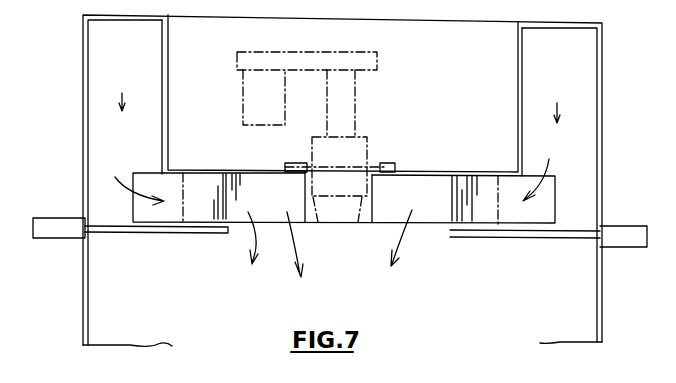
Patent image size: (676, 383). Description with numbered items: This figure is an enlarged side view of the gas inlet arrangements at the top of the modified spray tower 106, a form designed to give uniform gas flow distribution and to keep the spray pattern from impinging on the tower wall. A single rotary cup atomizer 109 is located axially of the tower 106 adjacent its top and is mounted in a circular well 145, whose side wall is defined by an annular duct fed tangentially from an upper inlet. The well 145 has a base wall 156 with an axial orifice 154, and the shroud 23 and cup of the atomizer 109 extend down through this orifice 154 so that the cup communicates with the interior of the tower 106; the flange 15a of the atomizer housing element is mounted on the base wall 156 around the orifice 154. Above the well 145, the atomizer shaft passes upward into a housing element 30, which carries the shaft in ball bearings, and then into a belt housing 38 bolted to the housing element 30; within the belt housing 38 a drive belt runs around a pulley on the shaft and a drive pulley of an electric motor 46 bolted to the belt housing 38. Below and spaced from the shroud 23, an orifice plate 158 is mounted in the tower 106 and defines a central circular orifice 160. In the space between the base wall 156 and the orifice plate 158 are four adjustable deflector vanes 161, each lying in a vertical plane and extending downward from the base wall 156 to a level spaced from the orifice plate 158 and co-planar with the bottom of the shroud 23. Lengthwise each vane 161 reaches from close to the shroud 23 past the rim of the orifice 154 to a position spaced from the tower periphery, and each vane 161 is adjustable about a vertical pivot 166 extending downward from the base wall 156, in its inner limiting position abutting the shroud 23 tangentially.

The tower 106 is at (83, 332).
The circular well 145 is at (509, 84).
The rotary cup atomizer 109 is at (484, 146).
The base wall 156 is at (175, 166).
The flange 15a is at (292, 159).
The axial orifice 154 is at (380, 164).
The shroud 23 is at (382, 192).
The adjustable deflector vane 161 is at (157, 216).
The vertical pivot 166 is at (183, 222).
The central circular orifice 160 is at (448, 212).
The orifice plate 158 is at (522, 224).
The electric motor 46 is at (286, 73).
The belt housing 38 is at (363, 53).
The housing element 30 is at (355, 82).